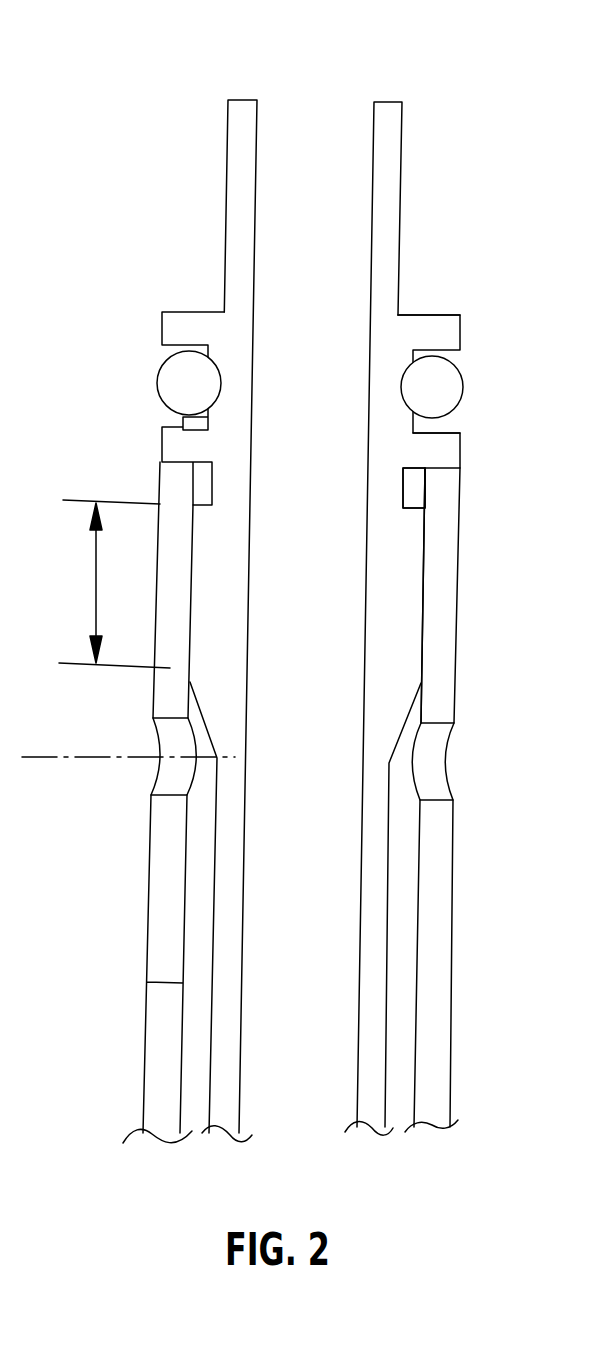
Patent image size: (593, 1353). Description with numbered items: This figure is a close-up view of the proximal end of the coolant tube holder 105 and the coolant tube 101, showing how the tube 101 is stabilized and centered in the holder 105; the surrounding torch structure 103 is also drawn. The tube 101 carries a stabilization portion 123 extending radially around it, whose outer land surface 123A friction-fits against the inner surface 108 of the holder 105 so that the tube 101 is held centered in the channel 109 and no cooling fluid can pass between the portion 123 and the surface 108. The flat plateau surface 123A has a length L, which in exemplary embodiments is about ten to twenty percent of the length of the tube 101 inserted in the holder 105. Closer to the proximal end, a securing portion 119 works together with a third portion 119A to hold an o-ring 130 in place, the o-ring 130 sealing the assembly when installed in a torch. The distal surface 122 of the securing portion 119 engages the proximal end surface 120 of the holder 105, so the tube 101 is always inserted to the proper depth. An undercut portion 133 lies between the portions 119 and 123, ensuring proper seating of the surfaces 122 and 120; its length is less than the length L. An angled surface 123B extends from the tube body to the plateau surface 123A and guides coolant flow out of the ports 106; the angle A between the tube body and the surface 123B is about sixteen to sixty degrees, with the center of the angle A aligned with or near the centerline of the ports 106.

The housing 103 is at (318, 130).
The coolant tube holder 105 is at (157, 503).
The proximal end surface 120 is at (180, 462).
The length L is at (114, 584).
The inner surface 108 is at (190, 632).
The angle A is at (173, 758).
The channel 109 is at (147, 982).
The securing portion 119 is at (452, 440).
The third portion 119A is at (445, 315).
The o-ring 130 is at (443, 378).
The distal surface 122 is at (452, 472).
The undercut portion 133 is at (588, 462).
The stabilization portion 123 is at (410, 542).
The outer land surface 123A is at (423, 578).
The angled surface 123B is at (413, 705).
The ports 106 is at (448, 765).
The coolant tube 101 is at (370, 953).